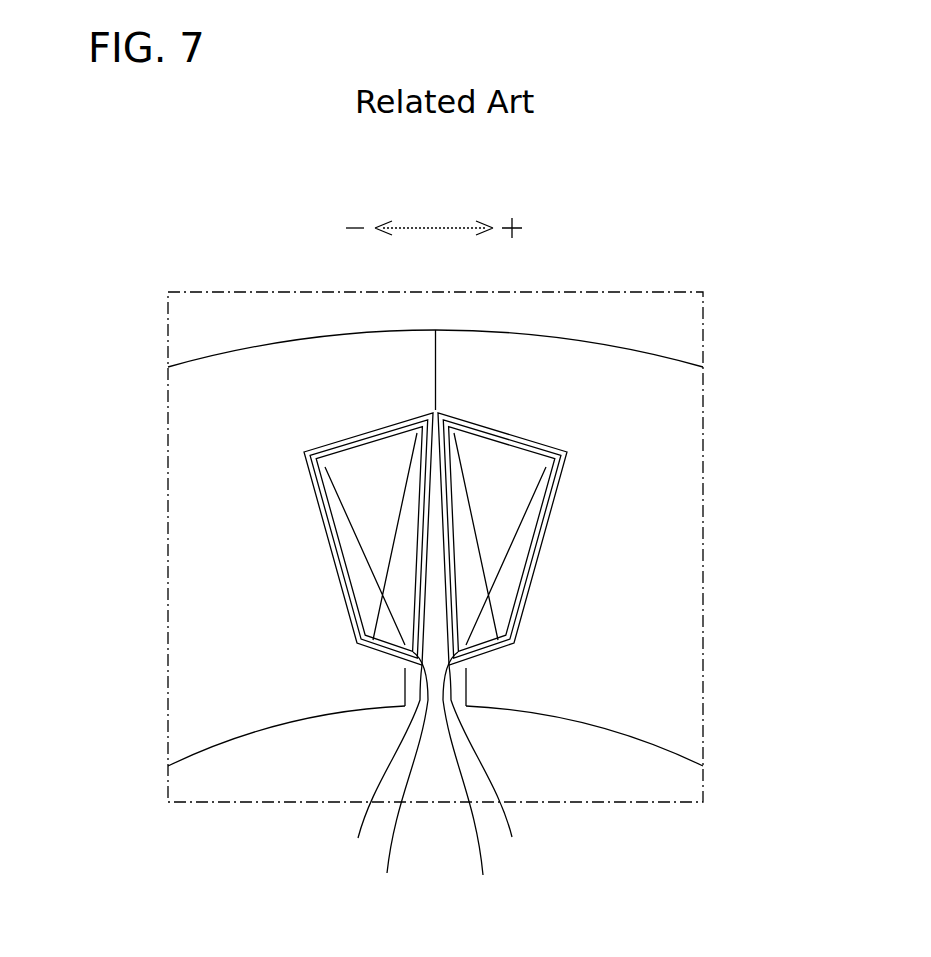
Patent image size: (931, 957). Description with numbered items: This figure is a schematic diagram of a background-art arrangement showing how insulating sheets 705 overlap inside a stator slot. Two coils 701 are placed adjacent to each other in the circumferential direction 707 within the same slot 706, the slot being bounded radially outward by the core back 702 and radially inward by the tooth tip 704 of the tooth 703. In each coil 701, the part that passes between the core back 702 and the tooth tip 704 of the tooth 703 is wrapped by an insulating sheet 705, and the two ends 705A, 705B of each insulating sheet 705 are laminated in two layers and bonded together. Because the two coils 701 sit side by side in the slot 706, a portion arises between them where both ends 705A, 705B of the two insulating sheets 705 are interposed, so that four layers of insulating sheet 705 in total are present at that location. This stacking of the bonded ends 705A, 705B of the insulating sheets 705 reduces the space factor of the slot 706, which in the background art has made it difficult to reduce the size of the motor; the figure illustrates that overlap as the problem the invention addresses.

The coil 701 is at (367, 467).
The core back 702 is at (292, 352).
The tooth 703 is at (218, 552).
The tooth tip 704 is at (378, 682).
The insulating sheet 705 is at (320, 513).
The end of insulating sheet 705A is at (439, 767).
The end of insulating sheet 705B is at (438, 781).
The slot 706 is at (437, 520).
The circumferential direction 707 is at (437, 226).